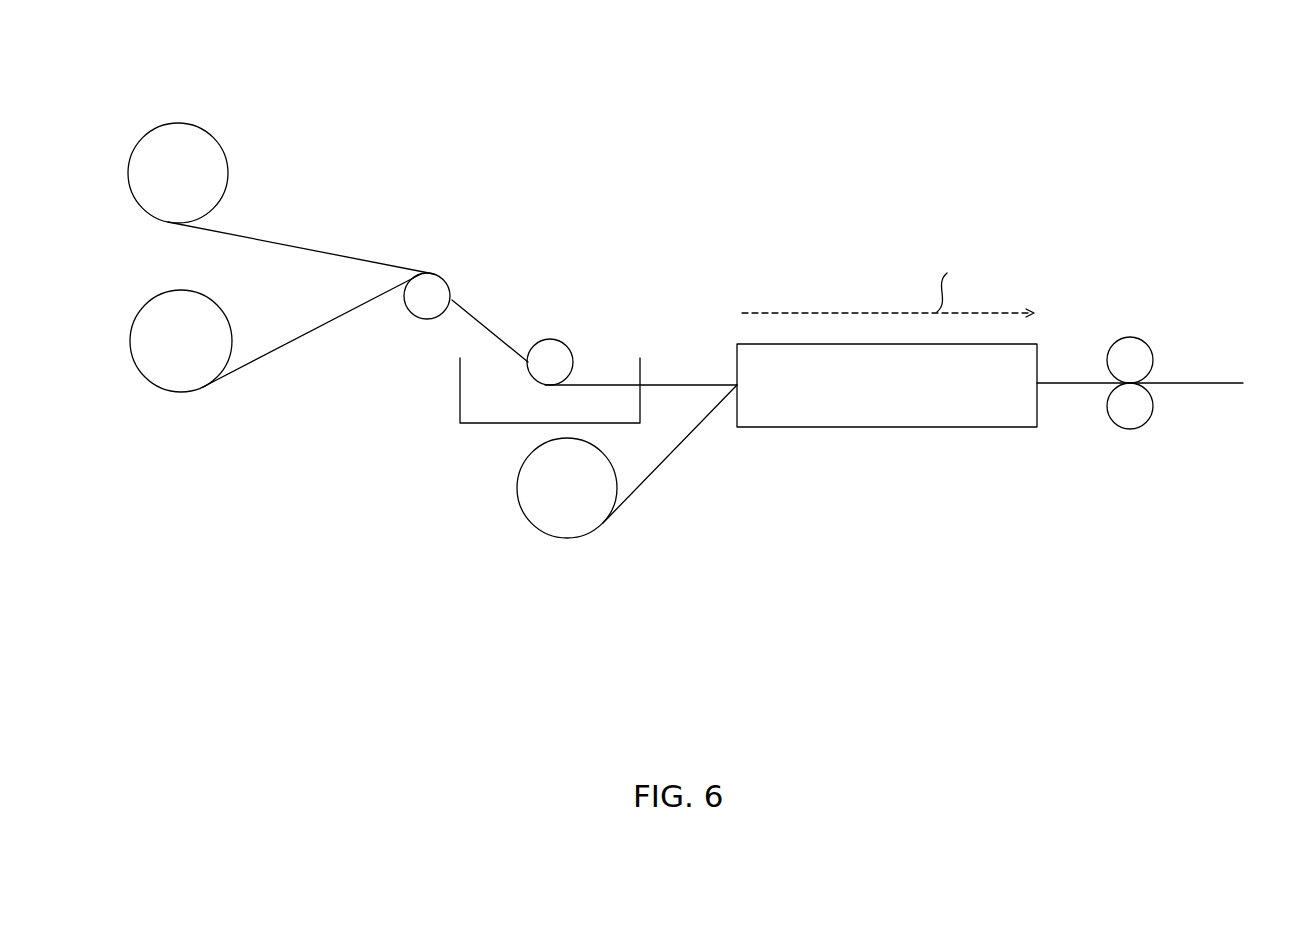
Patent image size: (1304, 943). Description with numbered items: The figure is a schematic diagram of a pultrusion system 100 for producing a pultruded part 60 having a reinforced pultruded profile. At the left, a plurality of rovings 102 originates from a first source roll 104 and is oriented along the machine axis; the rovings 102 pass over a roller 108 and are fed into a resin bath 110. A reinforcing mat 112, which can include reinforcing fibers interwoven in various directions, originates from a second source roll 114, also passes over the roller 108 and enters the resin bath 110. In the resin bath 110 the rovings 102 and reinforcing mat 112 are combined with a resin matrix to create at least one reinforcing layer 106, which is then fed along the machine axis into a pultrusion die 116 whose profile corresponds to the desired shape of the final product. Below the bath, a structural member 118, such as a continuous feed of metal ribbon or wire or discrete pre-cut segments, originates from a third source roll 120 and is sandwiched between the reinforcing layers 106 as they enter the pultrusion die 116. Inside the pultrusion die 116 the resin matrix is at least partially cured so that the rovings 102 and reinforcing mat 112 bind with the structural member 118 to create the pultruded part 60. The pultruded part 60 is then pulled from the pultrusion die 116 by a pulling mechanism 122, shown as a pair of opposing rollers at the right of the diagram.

The pultrusion system 100 is at (737, 166).
The plurality of rovings 102 is at (350, 257).
The first source roll 104 is at (218, 140).
The reinforcing layer 106 is at (703, 383).
The roller 108 is at (445, 283).
The resin bath 110 is at (458, 380).
The reinforcing mat 112 is at (283, 343).
The second source roll 114 is at (190, 393).
The pultrusion die 116 is at (963, 427).
The structural member 118 is at (679, 446).
The third source roll 120 is at (517, 503).
The pulling mechanism 122 is at (1145, 337).
The pultruded part 60 is at (1185, 385).